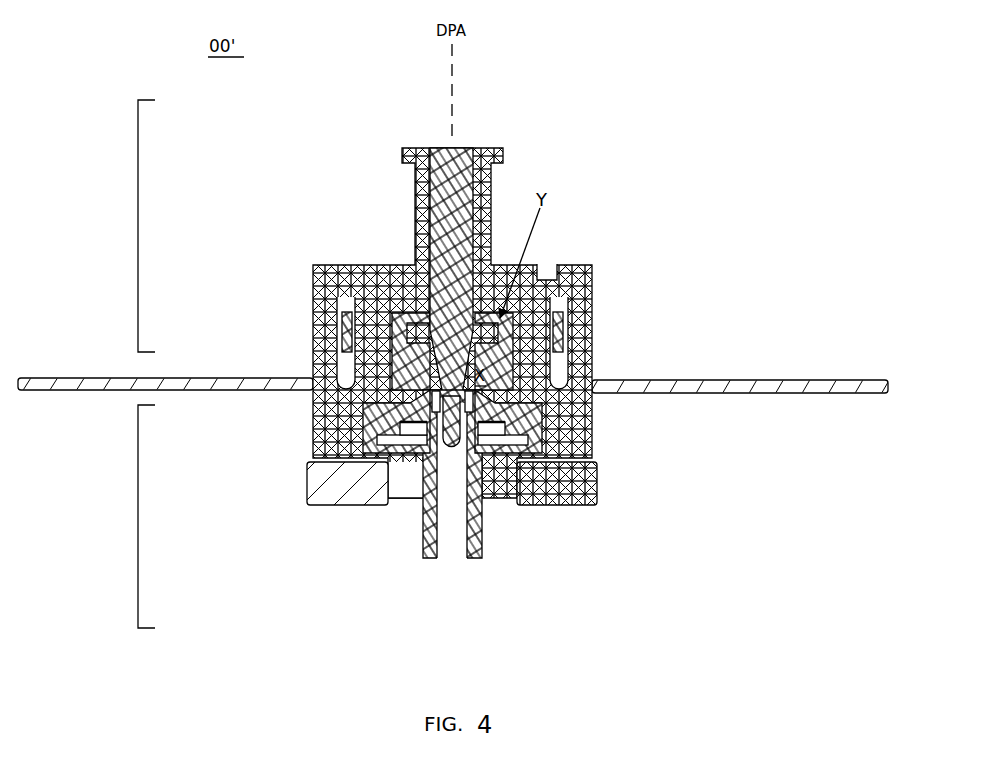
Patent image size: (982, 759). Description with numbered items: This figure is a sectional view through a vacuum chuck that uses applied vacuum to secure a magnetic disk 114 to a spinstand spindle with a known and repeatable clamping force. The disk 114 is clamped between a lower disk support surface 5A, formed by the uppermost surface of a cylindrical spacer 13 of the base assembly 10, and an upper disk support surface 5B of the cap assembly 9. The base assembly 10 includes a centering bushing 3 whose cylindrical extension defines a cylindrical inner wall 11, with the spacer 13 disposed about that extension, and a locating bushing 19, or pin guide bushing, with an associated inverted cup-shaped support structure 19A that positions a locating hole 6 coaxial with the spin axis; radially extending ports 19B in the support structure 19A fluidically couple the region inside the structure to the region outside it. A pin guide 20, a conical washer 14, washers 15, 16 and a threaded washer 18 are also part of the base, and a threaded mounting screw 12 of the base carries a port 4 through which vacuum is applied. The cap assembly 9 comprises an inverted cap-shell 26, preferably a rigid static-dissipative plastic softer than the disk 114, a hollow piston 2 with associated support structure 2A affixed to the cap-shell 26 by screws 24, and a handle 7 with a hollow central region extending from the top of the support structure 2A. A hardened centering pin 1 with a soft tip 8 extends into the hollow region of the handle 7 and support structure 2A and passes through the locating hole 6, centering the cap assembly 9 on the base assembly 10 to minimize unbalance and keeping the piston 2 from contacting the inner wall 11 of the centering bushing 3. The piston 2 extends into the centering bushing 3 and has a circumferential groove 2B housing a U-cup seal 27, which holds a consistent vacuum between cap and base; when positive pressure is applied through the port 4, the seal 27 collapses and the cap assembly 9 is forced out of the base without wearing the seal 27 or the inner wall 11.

The centering pin 1 is at (325, 428).
The piston 2 is at (577, 345).
The support structure 2A is at (484, 318).
The circumferential groove 2B is at (378, 360).
The centering bushing 3 is at (307, 482).
The port 4 is at (449, 548).
The lower disk support surface 5A is at (312, 397).
The upper disk support surface 5B is at (321, 379).
The locating hole 6 is at (410, 326).
The handle 7 is at (493, 186).
The soft tip 8 is at (462, 452).
The cap assembly 9 is at (122, 226).
The base assembly 10 is at (119, 516).
The cylindrical inner wall 11 is at (603, 374).
The threaded mounting screw 12 is at (424, 540).
The cylindrical spacer 13 is at (597, 421).
The conical washer 14 is at (506, 447).
The washer 15 is at (514, 440).
The washer 16 is at (522, 432).
The threaded washer 18 is at (504, 463).
The locating bushing 19 is at (422, 312).
The inverted cup-shaped support structure 19A is at (596, 410).
The radially extending ports 19B is at (367, 328).
The pin guide 20 is at (556, 372).
The screws 24 is at (554, 260).
The cap-shell 26 is at (598, 312).
The U-cup seal 27 is at (413, 352).
The magnetic disk 114 is at (787, 396).